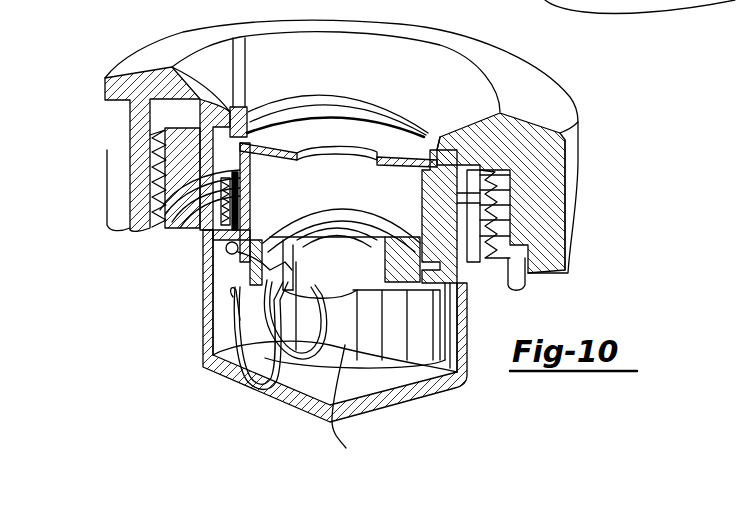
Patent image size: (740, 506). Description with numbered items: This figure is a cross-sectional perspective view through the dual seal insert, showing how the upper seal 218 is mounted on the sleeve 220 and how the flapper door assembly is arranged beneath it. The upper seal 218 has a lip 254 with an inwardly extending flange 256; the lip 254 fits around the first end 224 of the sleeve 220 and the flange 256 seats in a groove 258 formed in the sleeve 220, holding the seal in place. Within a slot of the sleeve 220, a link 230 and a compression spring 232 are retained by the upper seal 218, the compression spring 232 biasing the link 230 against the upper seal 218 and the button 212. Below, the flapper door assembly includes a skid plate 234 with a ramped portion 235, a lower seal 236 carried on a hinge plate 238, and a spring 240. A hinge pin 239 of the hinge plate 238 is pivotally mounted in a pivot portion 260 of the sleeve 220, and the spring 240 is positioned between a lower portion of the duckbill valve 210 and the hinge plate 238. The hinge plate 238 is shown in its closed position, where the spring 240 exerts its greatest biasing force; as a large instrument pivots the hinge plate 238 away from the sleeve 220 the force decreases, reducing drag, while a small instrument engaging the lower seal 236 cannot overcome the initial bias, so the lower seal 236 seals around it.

The duckbill valve 210 is at (425, 400).
The button 212 is at (152, 40).
The upper seal 218 is at (268, 145).
The sleeve 220 is at (170, 252).
The first end 224 is at (240, 172).
The link 230 is at (215, 185).
The compression spring 232 is at (170, 237).
The skid plate 234 is at (240, 325).
The ramped portion 235 is at (452, 272).
The lower seal 236 is at (345, 327).
The hinge plate 238 is at (296, 348).
The hinge pin 239 is at (232, 296).
The spring 240 is at (358, 403).
The lip 254 is at (447, 137).
The flange 256 is at (460, 182).
The groove 258 is at (505, 218).
The pivot portion 260 is at (228, 266).